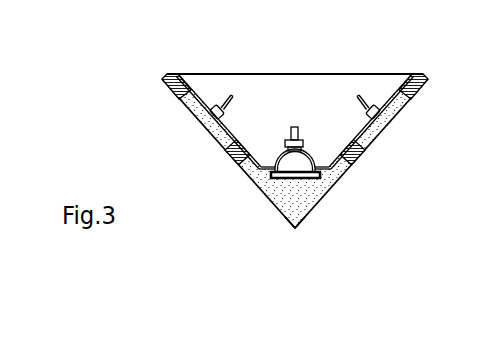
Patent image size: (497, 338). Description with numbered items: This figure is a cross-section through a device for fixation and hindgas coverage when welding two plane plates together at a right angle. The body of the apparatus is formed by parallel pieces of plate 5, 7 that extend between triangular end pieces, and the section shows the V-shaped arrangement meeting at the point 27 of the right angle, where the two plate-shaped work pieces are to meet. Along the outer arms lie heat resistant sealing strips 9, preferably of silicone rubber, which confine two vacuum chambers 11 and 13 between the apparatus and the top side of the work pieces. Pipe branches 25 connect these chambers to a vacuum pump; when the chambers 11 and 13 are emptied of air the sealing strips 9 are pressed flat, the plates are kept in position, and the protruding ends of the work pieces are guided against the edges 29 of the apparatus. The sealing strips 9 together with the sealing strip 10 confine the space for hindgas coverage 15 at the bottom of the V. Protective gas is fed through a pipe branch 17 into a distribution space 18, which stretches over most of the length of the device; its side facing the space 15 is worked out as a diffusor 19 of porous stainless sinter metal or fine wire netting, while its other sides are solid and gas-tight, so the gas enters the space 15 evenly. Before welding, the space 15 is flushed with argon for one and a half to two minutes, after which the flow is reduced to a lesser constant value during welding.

The piece of plate 5 is at (321, 167).
The piece of plate 7 is at (193, 87).
The sealing strip 9 is at (174, 96).
The sealing strip 10 is at (263, 189).
The vacuum chamber 11 is at (405, 123).
The vacuum chamber 13 is at (190, 123).
The space for hindgas coverage 15 is at (288, 202).
The pipe branch 17 is at (292, 127).
The distribution space 18 is at (280, 166).
The diffusor 19 is at (296, 179).
The pipe branch 25 is at (230, 93).
The point of the right angle 27 is at (293, 226).
The edge 29 is at (216, 143).